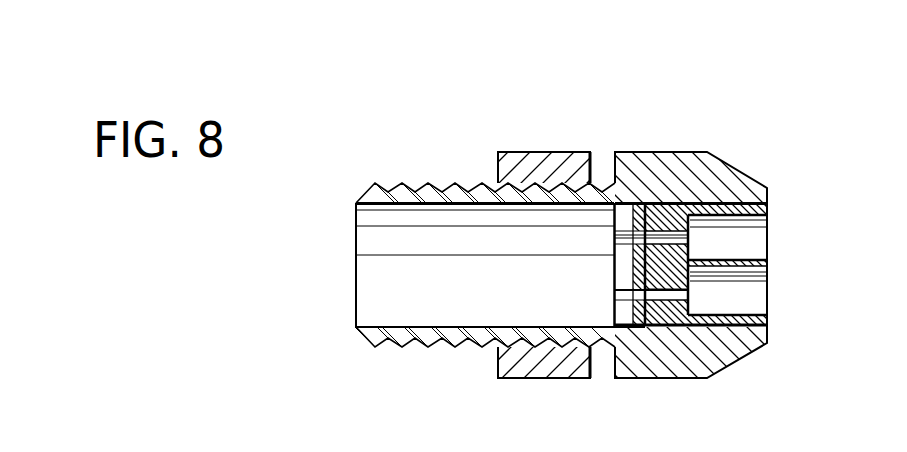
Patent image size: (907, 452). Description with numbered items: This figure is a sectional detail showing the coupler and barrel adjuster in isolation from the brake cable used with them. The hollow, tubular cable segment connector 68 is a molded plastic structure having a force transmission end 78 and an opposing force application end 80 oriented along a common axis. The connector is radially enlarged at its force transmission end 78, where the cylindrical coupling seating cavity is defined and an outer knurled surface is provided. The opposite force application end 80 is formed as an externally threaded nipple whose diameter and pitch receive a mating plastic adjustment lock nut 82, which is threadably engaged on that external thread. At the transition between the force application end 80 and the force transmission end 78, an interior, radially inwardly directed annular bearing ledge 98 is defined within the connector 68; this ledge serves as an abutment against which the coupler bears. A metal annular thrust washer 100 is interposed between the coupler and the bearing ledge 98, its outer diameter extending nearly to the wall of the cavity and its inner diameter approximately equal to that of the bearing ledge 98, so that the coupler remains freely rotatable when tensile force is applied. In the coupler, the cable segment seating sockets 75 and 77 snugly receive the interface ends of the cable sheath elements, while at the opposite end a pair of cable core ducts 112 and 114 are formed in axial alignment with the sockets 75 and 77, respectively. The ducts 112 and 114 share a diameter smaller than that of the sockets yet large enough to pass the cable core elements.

The cable segment connector 68 is at (760, 168).
The cable segment seating socket 75 is at (738, 314).
The cable segment seating socket 77 is at (740, 262).
The force transmission end 78 is at (768, 193).
The force application end 80 is at (380, 189).
The adjustment lock nut 82 is at (522, 152).
The bearing ledge 98 is at (645, 210).
The thrust washer 100 is at (645, 298).
The cable core duct 112 is at (665, 299).
The cable core duct 114 is at (682, 244).